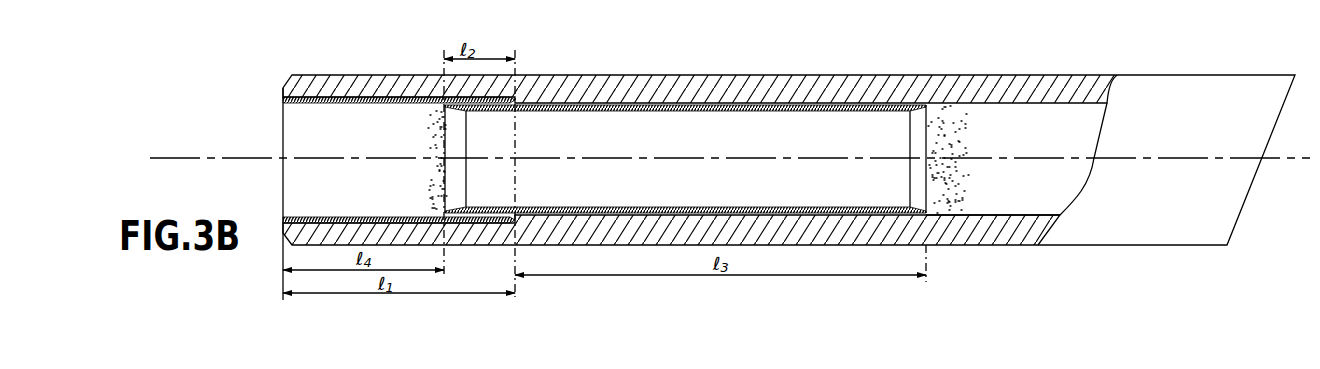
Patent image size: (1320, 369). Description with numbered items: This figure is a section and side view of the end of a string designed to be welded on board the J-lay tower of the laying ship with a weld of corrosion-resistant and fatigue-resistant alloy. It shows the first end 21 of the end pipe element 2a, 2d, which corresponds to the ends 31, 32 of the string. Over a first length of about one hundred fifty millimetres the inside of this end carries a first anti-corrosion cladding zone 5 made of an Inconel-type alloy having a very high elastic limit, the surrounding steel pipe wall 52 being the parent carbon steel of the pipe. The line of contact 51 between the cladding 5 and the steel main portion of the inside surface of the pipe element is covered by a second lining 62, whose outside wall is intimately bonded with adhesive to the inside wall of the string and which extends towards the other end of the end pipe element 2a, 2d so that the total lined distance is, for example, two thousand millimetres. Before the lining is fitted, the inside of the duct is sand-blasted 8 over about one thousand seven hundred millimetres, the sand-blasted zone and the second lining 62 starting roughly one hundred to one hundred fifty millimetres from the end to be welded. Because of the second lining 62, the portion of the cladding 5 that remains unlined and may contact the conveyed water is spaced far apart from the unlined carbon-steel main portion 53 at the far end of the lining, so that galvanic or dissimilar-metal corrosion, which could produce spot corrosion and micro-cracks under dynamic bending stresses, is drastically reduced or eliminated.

The first end of the end pipe element 21 is at (730, 141).
The end of the string 31 is at (730, 141).
The end of the string 32 is at (264, 152).
The first anti-corrosion cladding zone 5 is at (323, 101).
The outer tube wall 52 is at (538, 98).
The line of contact 51 is at (516, 147).
The second lining 62 is at (786, 123).
The end pipe element 2a is at (1129, 140).
The end pipe element 2d is at (982, 80).
The sand-blasted zone 8 is at (948, 204).
The carbon-steel main portion 53 is at (990, 208).